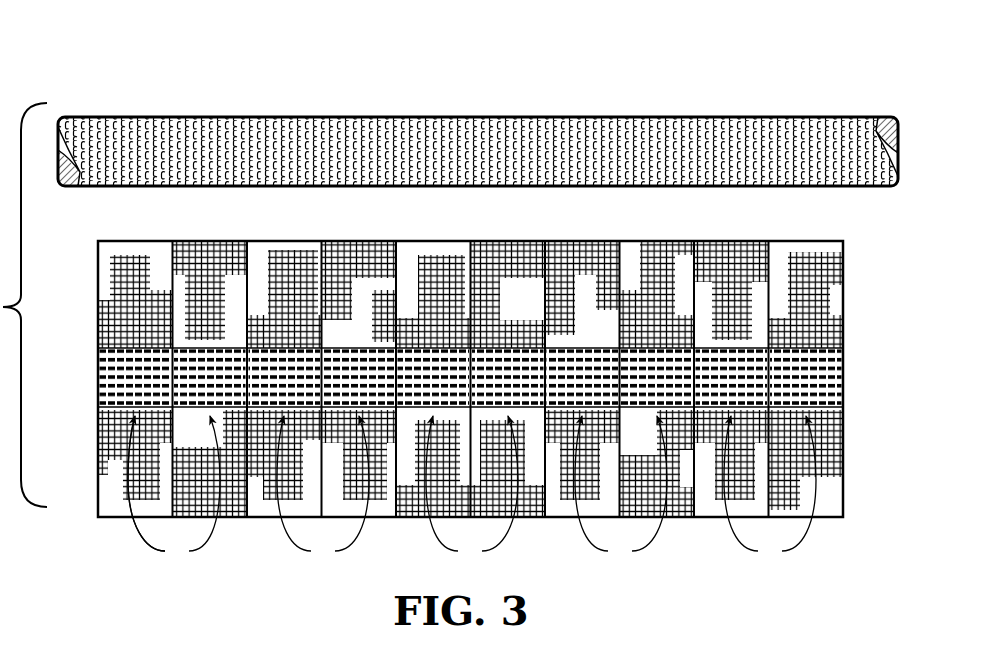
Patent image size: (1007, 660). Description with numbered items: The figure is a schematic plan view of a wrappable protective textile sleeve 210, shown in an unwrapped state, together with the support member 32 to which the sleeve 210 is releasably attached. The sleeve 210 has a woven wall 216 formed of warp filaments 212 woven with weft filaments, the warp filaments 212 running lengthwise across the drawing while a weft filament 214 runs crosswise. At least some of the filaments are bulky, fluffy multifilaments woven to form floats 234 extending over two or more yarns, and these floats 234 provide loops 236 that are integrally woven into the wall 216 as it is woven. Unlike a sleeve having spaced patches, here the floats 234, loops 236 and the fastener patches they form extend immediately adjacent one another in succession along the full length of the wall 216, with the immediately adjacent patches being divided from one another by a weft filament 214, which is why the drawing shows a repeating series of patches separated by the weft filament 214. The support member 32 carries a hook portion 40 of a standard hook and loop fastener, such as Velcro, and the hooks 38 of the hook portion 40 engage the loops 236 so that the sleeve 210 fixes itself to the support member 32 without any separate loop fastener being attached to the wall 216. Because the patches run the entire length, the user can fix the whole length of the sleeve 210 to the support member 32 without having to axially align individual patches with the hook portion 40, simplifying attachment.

The hook portion 40 is at (478, 104).
The hooks 38 is at (693, 126).
The support member 32 is at (797, 133).
The sleeve 210 is at (475, 378).
The warp filaments 212 is at (830, 262).
The weft filament 214 is at (243, 287).
The wall 216 is at (856, 435).
The floats 234 is at (440, 304).
The loops 236 is at (82, 357).